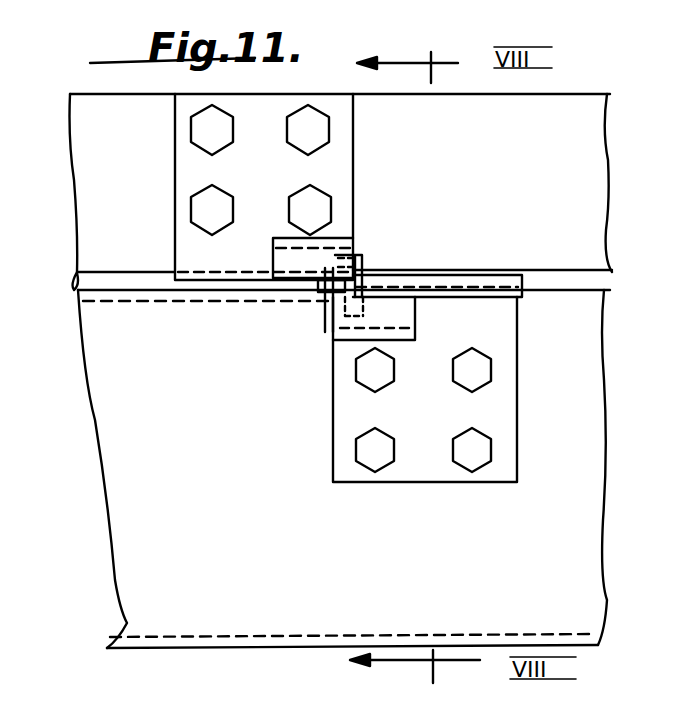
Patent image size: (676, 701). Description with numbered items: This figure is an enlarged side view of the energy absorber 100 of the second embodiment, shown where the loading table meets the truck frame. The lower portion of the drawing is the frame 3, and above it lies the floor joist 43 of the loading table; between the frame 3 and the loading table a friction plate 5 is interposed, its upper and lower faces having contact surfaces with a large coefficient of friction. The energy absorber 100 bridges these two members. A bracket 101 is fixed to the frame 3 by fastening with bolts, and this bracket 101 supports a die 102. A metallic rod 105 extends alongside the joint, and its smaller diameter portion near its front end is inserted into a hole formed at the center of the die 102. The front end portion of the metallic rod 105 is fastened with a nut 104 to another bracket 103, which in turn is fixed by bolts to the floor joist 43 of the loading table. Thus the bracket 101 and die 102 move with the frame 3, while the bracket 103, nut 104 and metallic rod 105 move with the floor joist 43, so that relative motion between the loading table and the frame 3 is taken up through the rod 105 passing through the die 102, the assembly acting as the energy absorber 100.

The frame 3 is at (122, 365).
The friction plate 5 is at (72, 285).
The floor joist 43 is at (121, 112).
The energy absorber 100 is at (372, 197).
The bracket 101 is at (348, 342).
The die 102 is at (372, 263).
The bracket 103 is at (325, 268).
The nut 104 is at (318, 300).
The metallic rod 105 is at (472, 283).